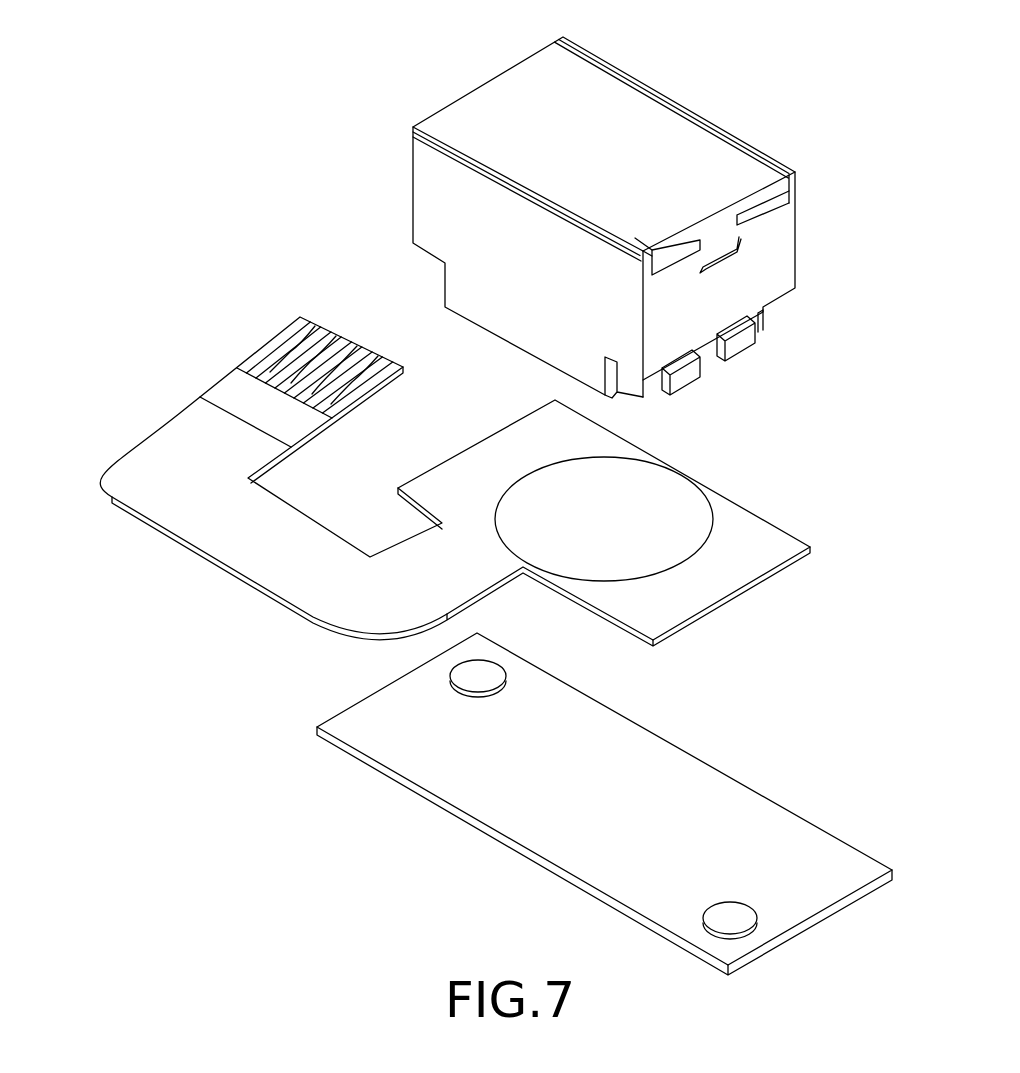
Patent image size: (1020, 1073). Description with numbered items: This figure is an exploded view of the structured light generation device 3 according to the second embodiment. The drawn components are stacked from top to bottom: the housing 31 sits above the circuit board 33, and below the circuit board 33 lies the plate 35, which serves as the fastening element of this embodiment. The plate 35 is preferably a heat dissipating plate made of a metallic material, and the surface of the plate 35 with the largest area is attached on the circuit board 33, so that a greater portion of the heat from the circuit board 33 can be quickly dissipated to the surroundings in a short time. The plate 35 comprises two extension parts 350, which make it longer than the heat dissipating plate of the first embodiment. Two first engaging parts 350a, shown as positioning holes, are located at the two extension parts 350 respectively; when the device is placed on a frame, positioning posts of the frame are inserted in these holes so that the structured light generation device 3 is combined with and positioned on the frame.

The structured light generation device 3 is at (809, 56).
The housing 31 is at (783, 246).
The circuit board 33 is at (743, 530).
The plate 35 is at (604, 788).
The extension part 350 is at (742, 808).
The first engaging part 350a is at (500, 663).